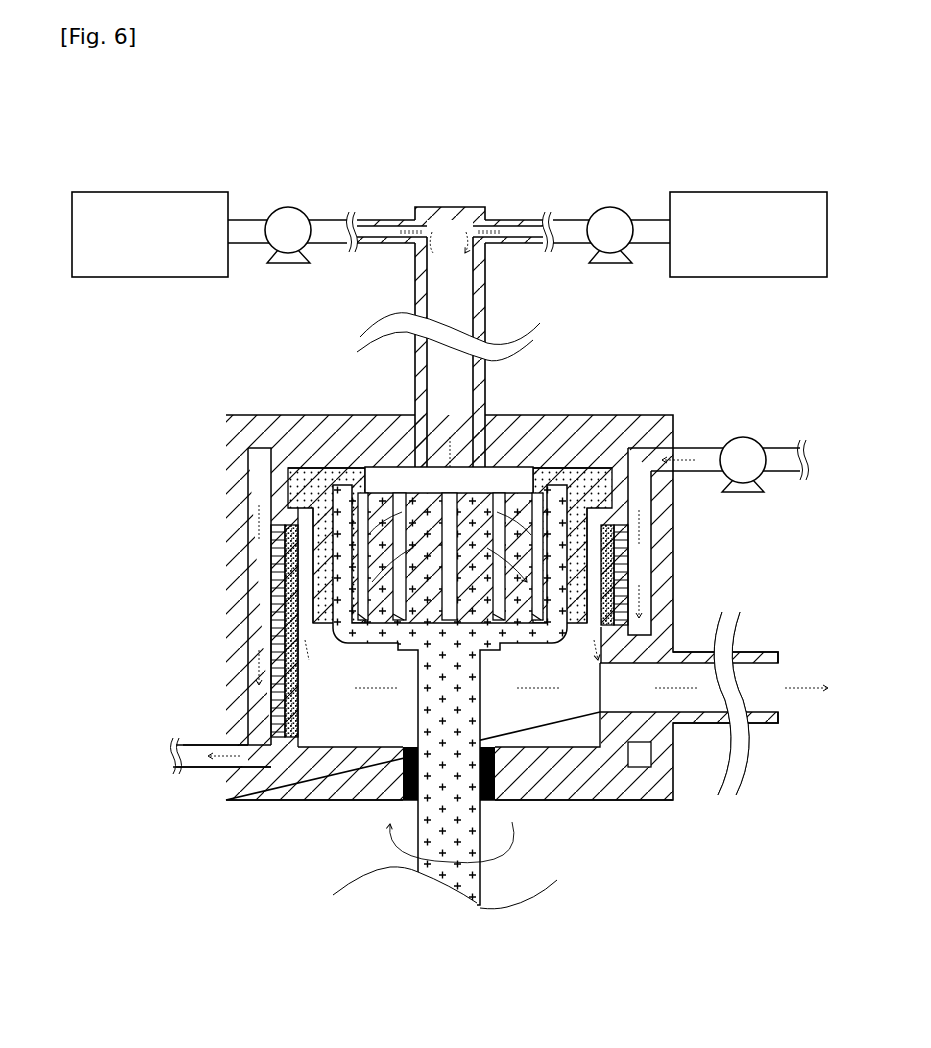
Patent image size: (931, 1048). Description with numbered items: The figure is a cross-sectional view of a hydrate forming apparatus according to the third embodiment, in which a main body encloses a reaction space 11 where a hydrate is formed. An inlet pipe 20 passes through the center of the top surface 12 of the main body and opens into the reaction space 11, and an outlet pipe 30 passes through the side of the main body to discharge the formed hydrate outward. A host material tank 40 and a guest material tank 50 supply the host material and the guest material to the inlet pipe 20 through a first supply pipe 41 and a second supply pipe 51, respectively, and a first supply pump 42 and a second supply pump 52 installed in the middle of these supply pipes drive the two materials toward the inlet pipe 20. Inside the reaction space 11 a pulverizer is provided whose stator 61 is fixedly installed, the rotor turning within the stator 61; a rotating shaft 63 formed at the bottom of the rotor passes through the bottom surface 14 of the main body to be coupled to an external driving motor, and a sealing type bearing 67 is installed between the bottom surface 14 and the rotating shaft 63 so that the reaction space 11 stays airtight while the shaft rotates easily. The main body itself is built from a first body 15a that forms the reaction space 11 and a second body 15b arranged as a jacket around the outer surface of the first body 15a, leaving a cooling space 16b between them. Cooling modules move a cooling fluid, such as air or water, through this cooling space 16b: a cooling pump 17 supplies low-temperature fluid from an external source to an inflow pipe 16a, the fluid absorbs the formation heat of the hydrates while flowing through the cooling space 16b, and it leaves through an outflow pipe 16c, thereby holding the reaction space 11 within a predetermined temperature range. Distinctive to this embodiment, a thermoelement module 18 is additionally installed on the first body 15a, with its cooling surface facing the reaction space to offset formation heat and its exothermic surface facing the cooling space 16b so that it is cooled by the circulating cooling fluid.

The reaction space 11 is at (300, 704).
The top surface 12 is at (310, 415).
The bottom surface 14 is at (308, 800).
The first body 15a is at (271, 562).
The second body 15b is at (246, 512).
The inflow pipe 16a is at (700, 448).
The cooling space 16b is at (258, 615).
The outflow pipe 16c is at (200, 768).
The cooling pump 17 is at (756, 440).
The thermoelement module 18 is at (640, 575).
The inlet pipe 20 is at (485, 300).
The outlet pipe 30 is at (752, 723).
The host material tank 40 is at (130, 192).
The first supply pipe 41 is at (245, 220).
The first supply pump 42 is at (305, 214).
The guest material tank 50 is at (798, 192).
The second supply pipe 51 is at (650, 220).
The second supply pump 52 is at (592, 214).
The stator 61 is at (600, 470).
The rotating shaft 63 is at (481, 720).
The sealing type bearing 67 is at (495, 782).